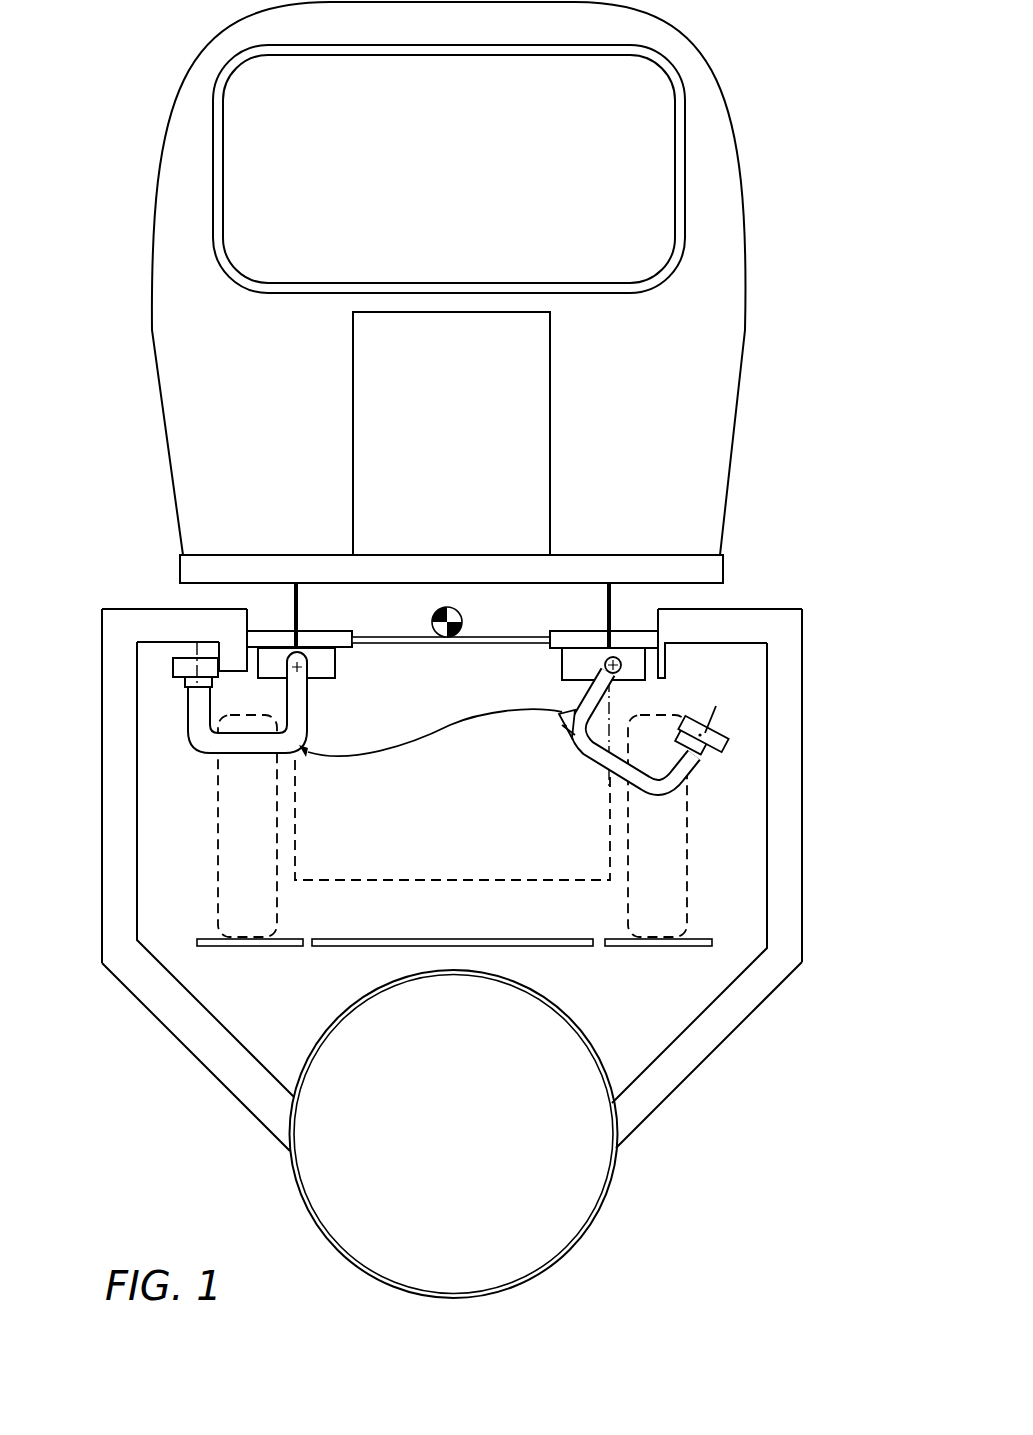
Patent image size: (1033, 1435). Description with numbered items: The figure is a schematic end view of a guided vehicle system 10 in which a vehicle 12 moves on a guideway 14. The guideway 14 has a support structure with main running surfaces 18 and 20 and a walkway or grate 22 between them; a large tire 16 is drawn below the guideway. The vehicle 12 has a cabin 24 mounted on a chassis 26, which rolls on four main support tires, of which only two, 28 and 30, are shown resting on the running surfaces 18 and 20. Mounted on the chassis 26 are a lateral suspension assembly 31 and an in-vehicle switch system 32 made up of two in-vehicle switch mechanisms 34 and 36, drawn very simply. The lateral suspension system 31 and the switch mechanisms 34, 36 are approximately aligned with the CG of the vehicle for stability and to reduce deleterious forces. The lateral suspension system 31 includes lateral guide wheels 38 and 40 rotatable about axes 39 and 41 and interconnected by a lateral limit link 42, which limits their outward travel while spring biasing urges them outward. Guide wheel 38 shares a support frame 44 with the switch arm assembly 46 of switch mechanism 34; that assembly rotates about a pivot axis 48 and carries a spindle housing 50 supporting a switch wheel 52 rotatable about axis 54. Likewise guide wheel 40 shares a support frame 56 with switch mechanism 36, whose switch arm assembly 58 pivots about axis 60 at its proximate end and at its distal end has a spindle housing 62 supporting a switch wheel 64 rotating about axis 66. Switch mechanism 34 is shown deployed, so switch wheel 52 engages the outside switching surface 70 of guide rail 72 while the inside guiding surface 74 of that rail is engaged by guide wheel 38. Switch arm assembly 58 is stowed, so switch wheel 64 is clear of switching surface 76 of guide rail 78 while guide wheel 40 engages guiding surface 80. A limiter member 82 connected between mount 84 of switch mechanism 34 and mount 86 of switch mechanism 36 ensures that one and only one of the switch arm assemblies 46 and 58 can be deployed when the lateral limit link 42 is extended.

The guided vehicle system 10 is at (72, 60).
The vehicle 12 is at (792, 250).
The guideway 14 is at (838, 935).
The wheel 16 is at (738, 1025).
The main running surface 18 is at (272, 948).
The main running surface 20 is at (665, 948).
The walkway or grate 22 is at (363, 948).
The cabin 24 is at (732, 102).
The chassis 26 is at (615, 618).
The main support tire 28 is at (218, 833).
The main support tire 30 is at (687, 845).
The lateral suspension assembly 31 is at (210, 598).
The in-vehicle switch system 32 is at (478, 860).
The in-vehicle switch mechanism 34 is at (313, 785).
The in-vehicle switch mechanism 36 is at (574, 772).
The lateral guide wheel 38 is at (332, 633).
The axis 39 is at (299, 612).
The lateral guide wheel 40 is at (565, 633).
The axis 41 is at (607, 612).
The lateral limit link 42 is at (395, 636).
The center of gravity CG is at (455, 608).
The support frame 44 is at (334, 680).
The switch arm assembly 46 is at (310, 711).
The pivot axis 48 is at (338, 658).
The spindle housing 50 is at (185, 682).
The switch wheel 52 is at (173, 662).
The axis 54 is at (207, 648).
The support frame 56 is at (563, 657).
The switch arm assembly 58 is at (562, 720).
The pivot axis 60 is at (622, 686).
The spindle housing 62 is at (700, 770).
The switch wheel 64 is at (732, 740).
The axis 66 is at (716, 709).
The switching surface 70 is at (212, 648).
The guide rail 72 is at (219, 655).
The guiding surface 74 is at (233, 640).
The switching surface 76 is at (803, 617).
The guide rail 78 is at (673, 624).
The guiding surface 80 is at (652, 623).
The limiter member 82 is at (428, 742).
The mount 84 is at (310, 755).
The mount 86 is at (562, 725).